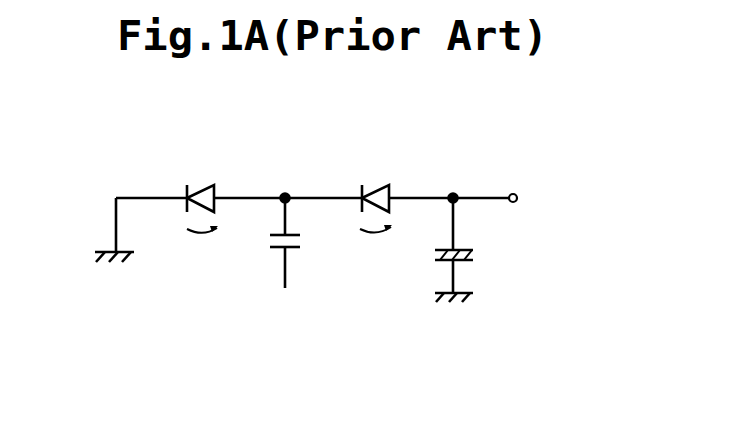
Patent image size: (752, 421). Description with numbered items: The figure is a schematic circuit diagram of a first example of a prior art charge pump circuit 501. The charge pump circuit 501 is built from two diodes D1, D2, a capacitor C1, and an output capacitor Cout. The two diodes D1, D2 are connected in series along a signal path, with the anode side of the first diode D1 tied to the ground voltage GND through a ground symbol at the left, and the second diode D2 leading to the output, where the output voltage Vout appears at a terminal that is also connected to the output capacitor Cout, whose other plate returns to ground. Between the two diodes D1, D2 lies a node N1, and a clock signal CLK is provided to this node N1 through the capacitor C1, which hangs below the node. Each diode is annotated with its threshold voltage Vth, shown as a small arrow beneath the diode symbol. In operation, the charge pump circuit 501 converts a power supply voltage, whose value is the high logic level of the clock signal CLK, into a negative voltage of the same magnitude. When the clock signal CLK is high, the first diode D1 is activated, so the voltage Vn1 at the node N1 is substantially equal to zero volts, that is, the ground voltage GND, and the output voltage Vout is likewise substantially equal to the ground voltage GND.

The charge pump circuit 501 is at (455, 146).
The ground voltage GND is at (82, 234).
The diode D1 is at (192, 183).
The diode D2 is at (373, 181).
The node N1 is at (287, 190).
The voltage at node N1 Vn1 is at (246, 178).
The threshold voltage Vth is at (291, 247).
The capacitor C1 is at (298, 248).
The clock signal CLK is at (289, 314).
The output voltage Vout is at (521, 195).
The output capacitor Cout is at (493, 250).